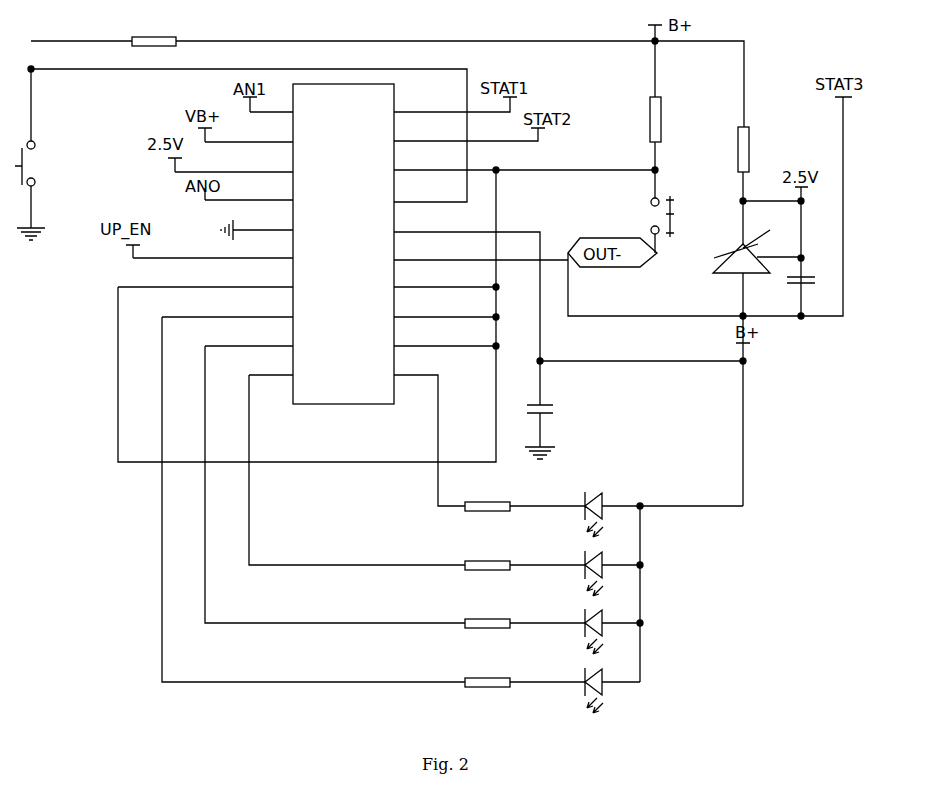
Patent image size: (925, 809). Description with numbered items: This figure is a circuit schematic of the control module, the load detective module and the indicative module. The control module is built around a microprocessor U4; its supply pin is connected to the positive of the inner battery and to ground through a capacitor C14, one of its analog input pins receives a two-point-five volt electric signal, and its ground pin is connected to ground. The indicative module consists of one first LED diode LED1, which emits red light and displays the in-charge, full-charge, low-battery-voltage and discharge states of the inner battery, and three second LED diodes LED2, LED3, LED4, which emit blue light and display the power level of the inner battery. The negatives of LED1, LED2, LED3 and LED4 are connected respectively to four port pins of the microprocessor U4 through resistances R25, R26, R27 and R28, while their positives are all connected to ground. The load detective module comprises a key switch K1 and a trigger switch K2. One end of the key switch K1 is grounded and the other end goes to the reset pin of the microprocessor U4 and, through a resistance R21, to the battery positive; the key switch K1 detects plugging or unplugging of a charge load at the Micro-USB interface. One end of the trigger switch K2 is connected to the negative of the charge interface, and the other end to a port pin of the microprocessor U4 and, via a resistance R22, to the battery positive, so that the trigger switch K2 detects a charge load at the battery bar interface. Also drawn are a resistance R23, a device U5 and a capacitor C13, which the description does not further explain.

The key switch K1 is at (41, 154).
The trigger switch K2 is at (648, 224).
The resistance R21 is at (154, 30).
The resistance R22 is at (673, 119).
The resistor R23 is at (760, 185).
The resistance R25 is at (487, 672).
The resistance R26 is at (487, 613).
The resistance R27 is at (487, 554).
The resistance R28 is at (487, 495).
The microprocessor U4 is at (344, 256).
The voltage reference U5 is at (742, 267).
The capacitor C13 is at (812, 292).
The capacitor C14 is at (556, 430).
The first LED diode LED1 is at (570, 688).
The second LED diode LED2 is at (567, 629).
The second LED diode LED3 is at (569, 571).
The second LED diode LED4 is at (569, 512).